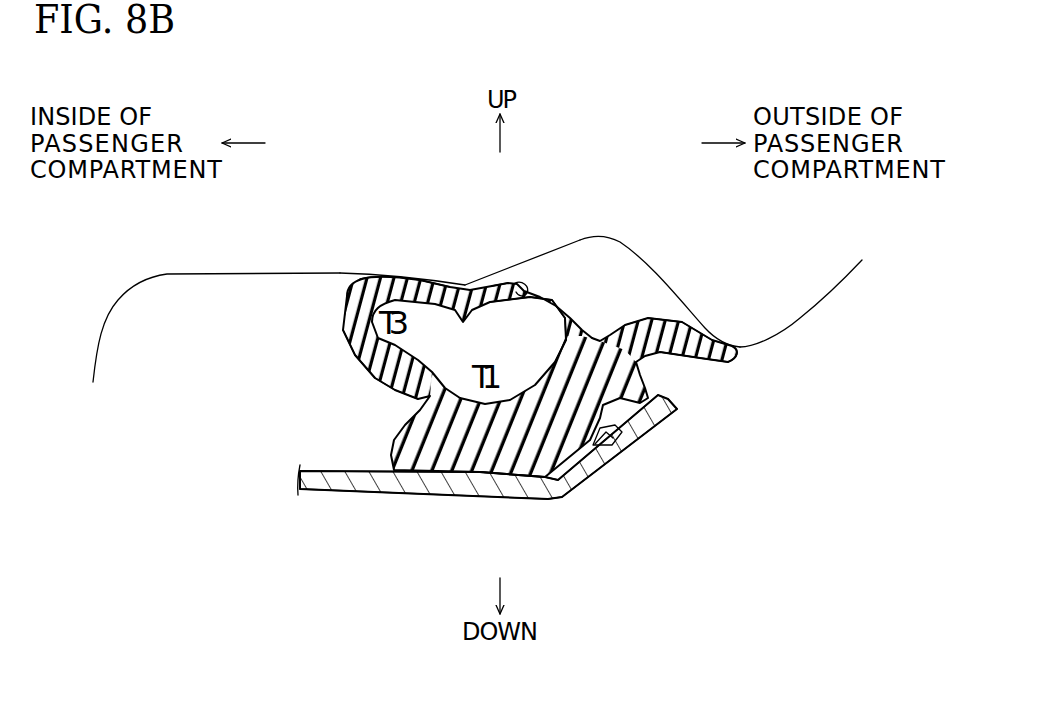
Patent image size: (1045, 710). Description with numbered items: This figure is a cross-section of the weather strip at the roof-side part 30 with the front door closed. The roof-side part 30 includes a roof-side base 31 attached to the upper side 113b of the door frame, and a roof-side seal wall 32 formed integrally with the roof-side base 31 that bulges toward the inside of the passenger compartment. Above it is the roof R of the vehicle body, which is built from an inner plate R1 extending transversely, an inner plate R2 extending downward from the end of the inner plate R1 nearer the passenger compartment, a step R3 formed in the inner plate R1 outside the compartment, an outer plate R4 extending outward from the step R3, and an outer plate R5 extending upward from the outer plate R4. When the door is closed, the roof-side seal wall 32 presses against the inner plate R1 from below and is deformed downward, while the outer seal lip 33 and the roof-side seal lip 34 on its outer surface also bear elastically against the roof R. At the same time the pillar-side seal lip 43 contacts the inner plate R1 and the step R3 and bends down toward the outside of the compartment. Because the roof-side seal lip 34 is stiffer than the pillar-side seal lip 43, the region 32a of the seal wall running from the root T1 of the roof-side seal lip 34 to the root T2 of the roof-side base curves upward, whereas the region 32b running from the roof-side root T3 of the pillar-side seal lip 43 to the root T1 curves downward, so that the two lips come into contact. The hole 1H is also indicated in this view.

The hole of door panel 1H is at (411, 276).
The roof-side part 30 is at (382, 386).
The roof-side base 31 is at (487, 490).
The roof-side seal wall 32 is at (441, 284).
The region of the roof-side seal wall 32a is at (533, 299).
The region of the roof-side seal wall 32b is at (460, 323).
The outer seal lip 33 is at (698, 320).
The roof-side seal lip 34 is at (522, 288).
The pillar-side seal lip 43 is at (506, 286).
The upper side of the frame 113b is at (300, 470).
The roof R is at (760, 352).
The inner plate R1 is at (340, 291).
The inner plate R2 is at (102, 340).
The step R3 is at (553, 252).
The outer plate R4 is at (643, 258).
The outer plate R5 is at (812, 318).
The root of the roof-side seal lip T1 is at (490, 300).
The root of the roof-side base T2 is at (586, 333).
The roof-side root of the pillar-side seal lip T3 is at (437, 310).